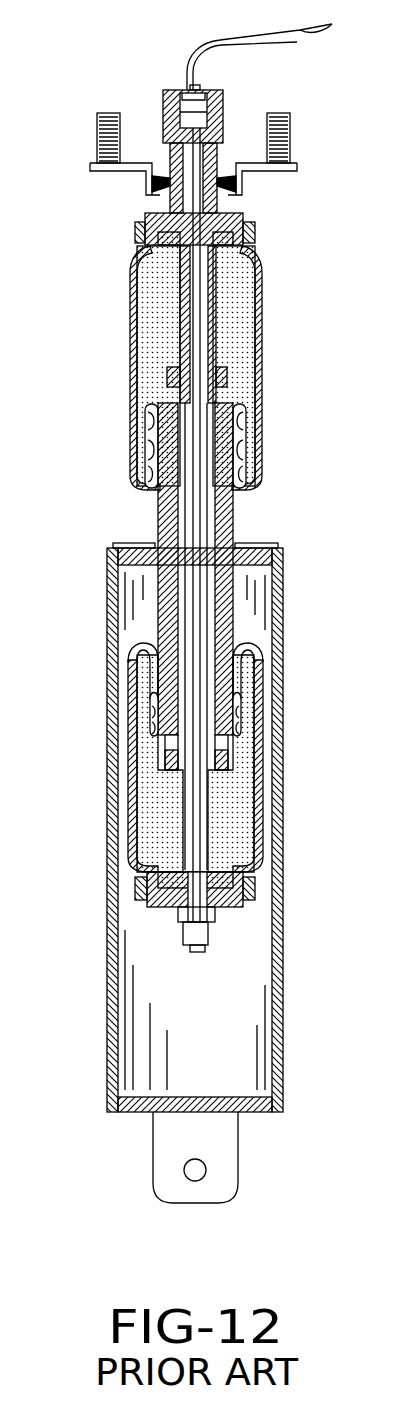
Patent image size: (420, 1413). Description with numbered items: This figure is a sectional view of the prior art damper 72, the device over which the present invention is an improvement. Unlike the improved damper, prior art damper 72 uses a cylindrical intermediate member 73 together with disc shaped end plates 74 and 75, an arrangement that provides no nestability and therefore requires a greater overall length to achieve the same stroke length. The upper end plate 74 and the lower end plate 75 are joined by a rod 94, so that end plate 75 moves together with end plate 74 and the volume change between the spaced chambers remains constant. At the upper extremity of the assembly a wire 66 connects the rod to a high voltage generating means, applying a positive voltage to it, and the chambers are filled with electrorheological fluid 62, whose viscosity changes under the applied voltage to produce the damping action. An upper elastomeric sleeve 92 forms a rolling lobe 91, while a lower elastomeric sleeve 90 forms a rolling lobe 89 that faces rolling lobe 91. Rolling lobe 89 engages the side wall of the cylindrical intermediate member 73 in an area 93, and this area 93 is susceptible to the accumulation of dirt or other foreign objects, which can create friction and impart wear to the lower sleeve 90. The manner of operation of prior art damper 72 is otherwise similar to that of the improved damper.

The electrorheological fluid 62 is at (171, 842).
The wire 66 is at (297, 42).
The prior art damper 72 is at (151, 873).
The cylindrical intermediate member 73 is at (227, 512).
The end plate 74 is at (243, 217).
The end plate 75 is at (223, 903).
The rolling lobe 89 is at (243, 647).
The lower elastomeric sleeve 90 is at (262, 820).
The rolling lobe 91 is at (262, 483).
The upper elastomeric sleeve 92 is at (260, 360).
The area 93 is at (237, 693).
The rod 94 is at (192, 328).